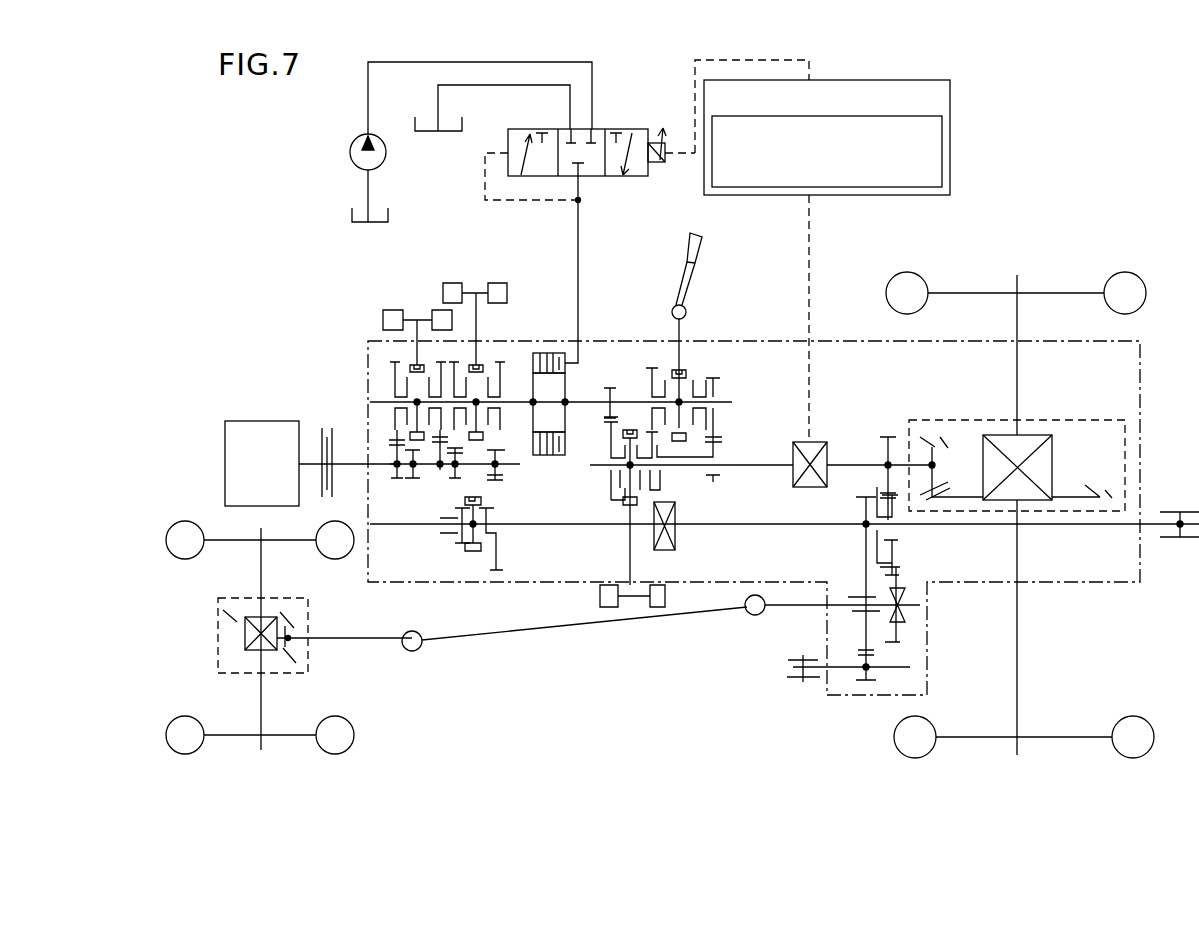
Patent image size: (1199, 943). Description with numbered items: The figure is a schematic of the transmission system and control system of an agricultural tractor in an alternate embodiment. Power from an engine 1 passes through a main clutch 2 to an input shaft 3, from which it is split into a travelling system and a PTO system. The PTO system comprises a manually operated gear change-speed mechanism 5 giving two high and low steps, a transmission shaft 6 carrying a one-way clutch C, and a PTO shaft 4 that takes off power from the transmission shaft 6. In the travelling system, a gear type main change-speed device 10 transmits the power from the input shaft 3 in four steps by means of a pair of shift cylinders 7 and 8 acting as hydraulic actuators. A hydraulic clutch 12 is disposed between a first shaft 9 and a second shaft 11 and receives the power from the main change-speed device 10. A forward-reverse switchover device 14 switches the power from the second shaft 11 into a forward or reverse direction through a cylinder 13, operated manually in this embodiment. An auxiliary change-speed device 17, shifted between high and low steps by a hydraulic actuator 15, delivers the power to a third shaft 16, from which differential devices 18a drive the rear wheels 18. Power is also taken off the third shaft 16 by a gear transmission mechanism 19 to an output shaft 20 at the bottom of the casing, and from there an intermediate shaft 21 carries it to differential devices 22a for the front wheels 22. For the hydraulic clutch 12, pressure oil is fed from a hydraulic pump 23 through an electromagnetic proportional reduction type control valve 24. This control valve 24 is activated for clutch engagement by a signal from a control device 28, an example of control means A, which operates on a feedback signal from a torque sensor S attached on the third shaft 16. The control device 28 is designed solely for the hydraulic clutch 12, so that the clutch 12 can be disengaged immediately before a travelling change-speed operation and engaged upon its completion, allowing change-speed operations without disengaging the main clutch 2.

The engine 1 is at (247, 421).
The main clutch 2 is at (325, 410).
The input shaft 3 is at (510, 470).
The PTO shaft 4 is at (1185, 512).
The gear change-speed mechanism 5 is at (456, 557).
The transmission shaft 6 is at (810, 541).
The shift cylinder 7 is at (393, 310).
The shift cylinder 8 is at (503, 283).
The first shaft 9 is at (511, 400).
The main change-speed device 10 is at (381, 376).
The second shaft 11 is at (732, 402).
The hydraulic clutch 12 is at (567, 387).
The cylinder 13 is at (700, 240).
The forward-reverse switchover device 14 is at (733, 366).
The hydraulic actuator 15 is at (600, 597).
The third shaft 16 is at (866, 457).
The auxiliary change-speed device 17 is at (596, 494).
The rear wheels 18 is at (1020, 491).
The differential devices 18a is at (1045, 418).
The gear transmission mechanism 19 is at (857, 583).
The output shaft 20 is at (787, 608).
The intermediate shaft 21 is at (604, 622).
The front wheels 22 is at (333, 559).
The differential devices 22a is at (238, 675).
The hydraulic pump 23 is at (350, 149).
The control valve 24 is at (624, 178).
The control device 28 is at (859, 247).
The control means A is at (942, 175).
The torque sensor S is at (803, 440).
The one-way clutch C is at (675, 545).